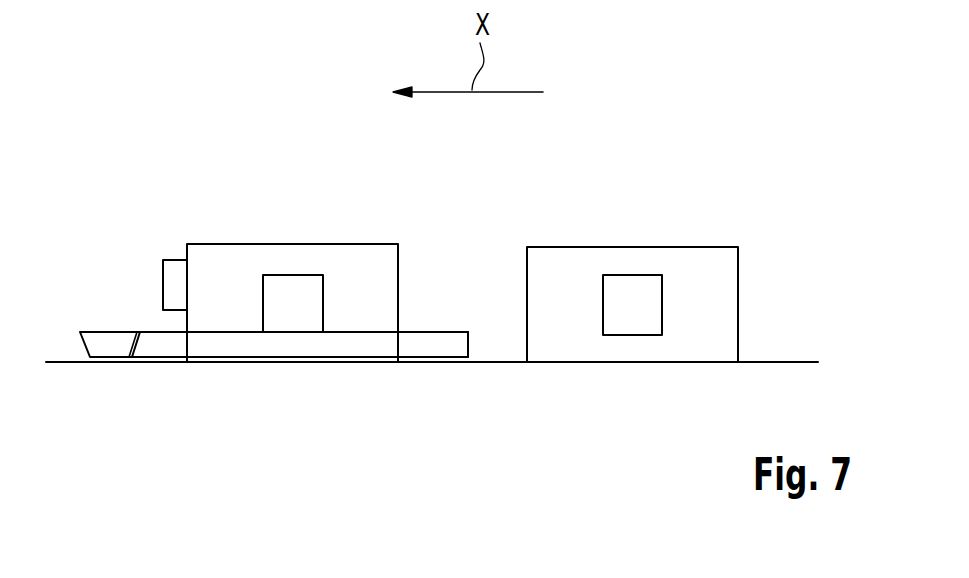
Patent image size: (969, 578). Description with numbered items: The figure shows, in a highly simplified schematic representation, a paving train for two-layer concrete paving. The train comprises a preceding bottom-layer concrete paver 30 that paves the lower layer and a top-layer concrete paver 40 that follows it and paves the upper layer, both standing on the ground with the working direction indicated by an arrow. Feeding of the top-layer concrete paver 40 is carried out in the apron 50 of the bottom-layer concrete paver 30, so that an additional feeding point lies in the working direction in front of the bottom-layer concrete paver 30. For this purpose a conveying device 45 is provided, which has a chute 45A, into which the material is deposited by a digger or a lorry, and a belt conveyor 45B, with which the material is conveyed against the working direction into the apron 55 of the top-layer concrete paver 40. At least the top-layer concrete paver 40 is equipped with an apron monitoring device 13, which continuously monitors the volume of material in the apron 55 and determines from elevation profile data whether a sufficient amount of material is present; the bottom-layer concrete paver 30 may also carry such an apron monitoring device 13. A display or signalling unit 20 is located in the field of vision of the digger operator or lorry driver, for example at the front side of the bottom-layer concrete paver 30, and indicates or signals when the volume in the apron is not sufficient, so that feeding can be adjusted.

The apron monitoring device 13 is at (293, 275).
The display or signalling unit 20 is at (177, 260).
The bottom-layer concrete paver 30 is at (363, 244).
The top-layer concrete paver 40 is at (700, 247).
The conveying device 45 is at (417, 333).
The chute 45A is at (112, 346).
The belt conveyor 45B is at (302, 345).
The apron 50 is at (102, 298).
The apron 55 is at (452, 308).